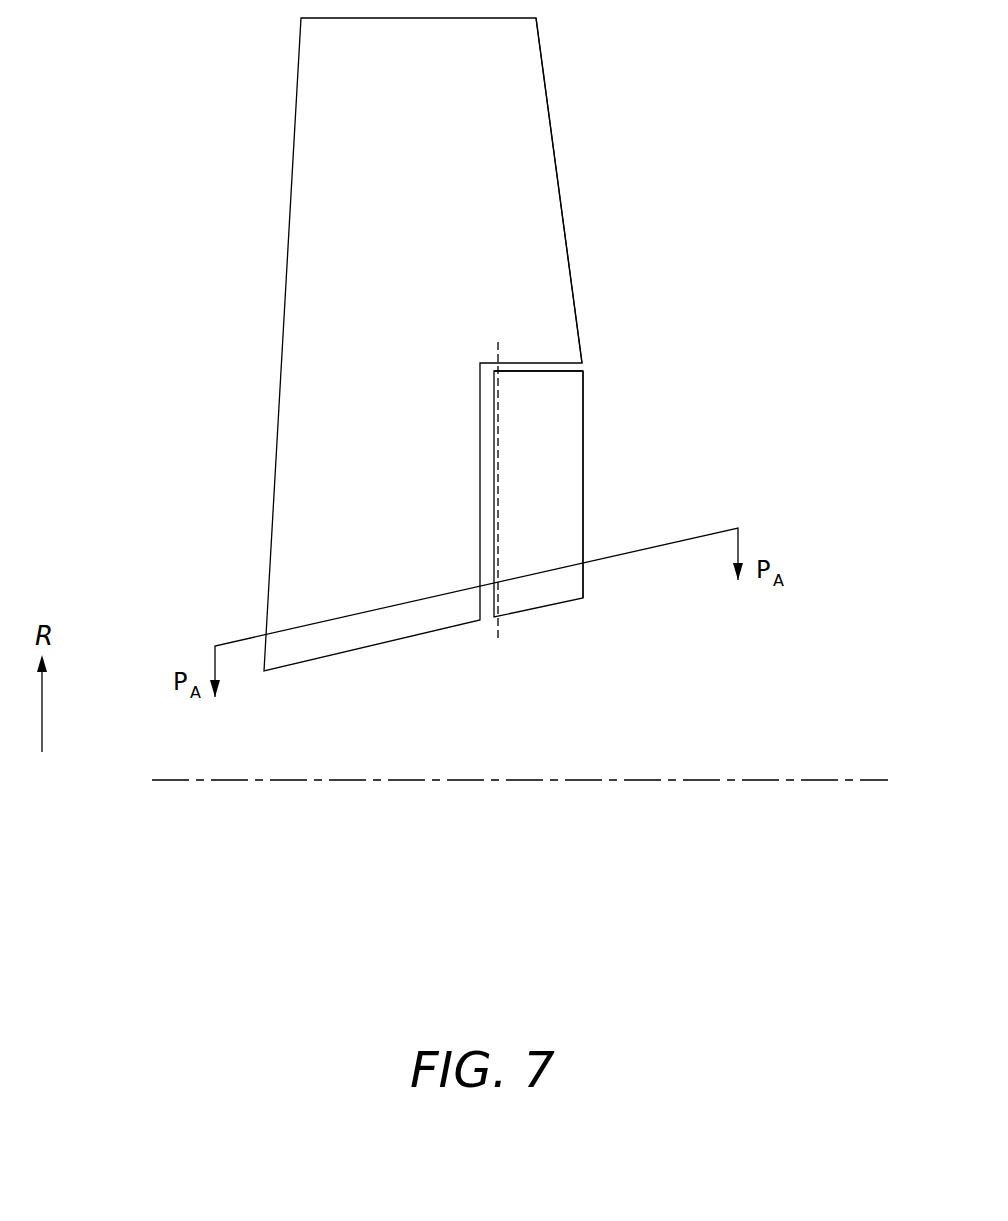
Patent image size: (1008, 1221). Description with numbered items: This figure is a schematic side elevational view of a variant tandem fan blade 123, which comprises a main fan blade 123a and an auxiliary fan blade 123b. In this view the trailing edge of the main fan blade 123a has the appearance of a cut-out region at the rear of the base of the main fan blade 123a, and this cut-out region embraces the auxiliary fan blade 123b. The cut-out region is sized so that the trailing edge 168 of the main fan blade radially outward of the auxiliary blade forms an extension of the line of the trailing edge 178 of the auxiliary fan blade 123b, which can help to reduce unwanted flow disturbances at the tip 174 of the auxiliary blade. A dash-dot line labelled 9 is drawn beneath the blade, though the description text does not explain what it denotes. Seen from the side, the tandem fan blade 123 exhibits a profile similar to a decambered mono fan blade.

The engine central axis 9 is at (817, 780).
The tandem fan blade 123 is at (526, 344).
The main fan blade 123a is at (450, 282).
The auxiliary fan blade 123b is at (560, 499).
The trailing edge of the main fan blade 168 is at (550, 122).
The tip of the auxiliary blade 174 is at (538, 371).
The trailing edge of the auxiliary fan blade 178 is at (583, 465).